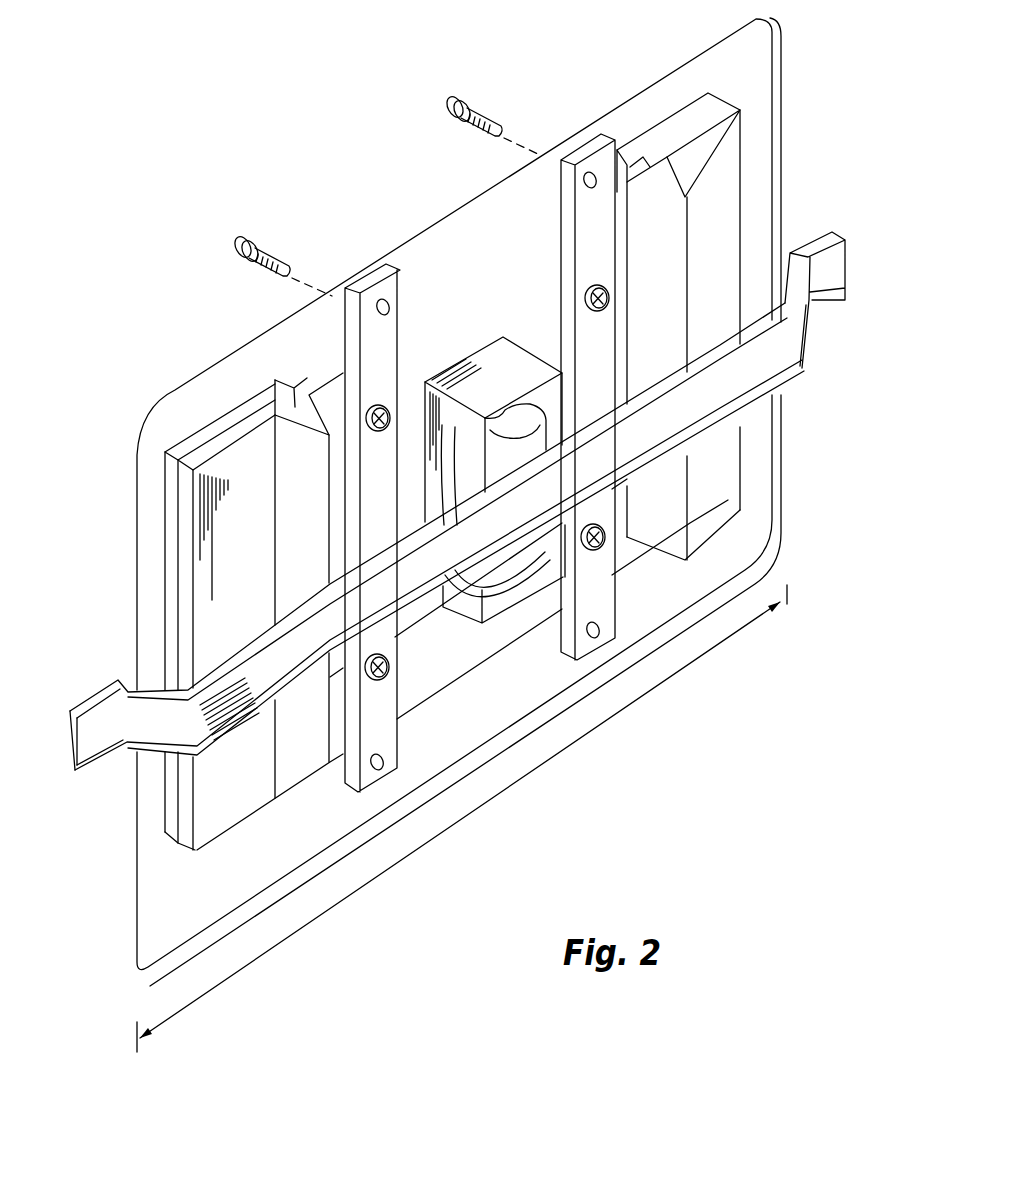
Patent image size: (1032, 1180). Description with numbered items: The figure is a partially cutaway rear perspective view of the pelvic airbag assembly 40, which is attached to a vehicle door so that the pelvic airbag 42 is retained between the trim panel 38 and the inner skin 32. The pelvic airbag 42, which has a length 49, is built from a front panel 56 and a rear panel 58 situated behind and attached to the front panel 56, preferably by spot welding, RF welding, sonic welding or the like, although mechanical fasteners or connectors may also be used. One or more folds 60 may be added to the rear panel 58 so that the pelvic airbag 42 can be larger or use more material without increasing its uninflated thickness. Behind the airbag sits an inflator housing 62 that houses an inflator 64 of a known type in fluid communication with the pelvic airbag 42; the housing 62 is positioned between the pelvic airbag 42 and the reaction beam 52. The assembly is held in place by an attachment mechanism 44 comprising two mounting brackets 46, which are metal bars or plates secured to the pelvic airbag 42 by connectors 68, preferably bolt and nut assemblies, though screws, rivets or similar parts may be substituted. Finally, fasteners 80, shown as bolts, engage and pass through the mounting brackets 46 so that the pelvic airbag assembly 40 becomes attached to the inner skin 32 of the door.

The inner skin 32 is at (774, 546).
The trim panel 38 is at (398, 138).
The pelvic airbag assembly 40 is at (500, 671).
The pelvic airbag 42 is at (717, 217).
The attachment mechanism 44 is at (475, 425).
The mounting bracket 46 is at (376, 278).
The length 49 is at (481, 803).
The reaction beam 52 is at (750, 372).
The front panel 56 is at (203, 575).
The rear panel 58 is at (192, 563).
The fold 60 is at (302, 458).
The inflator housing 62 is at (488, 397).
The inflator 64 is at (523, 417).
The connector 68 is at (370, 408).
The fastener 80 is at (240, 234).